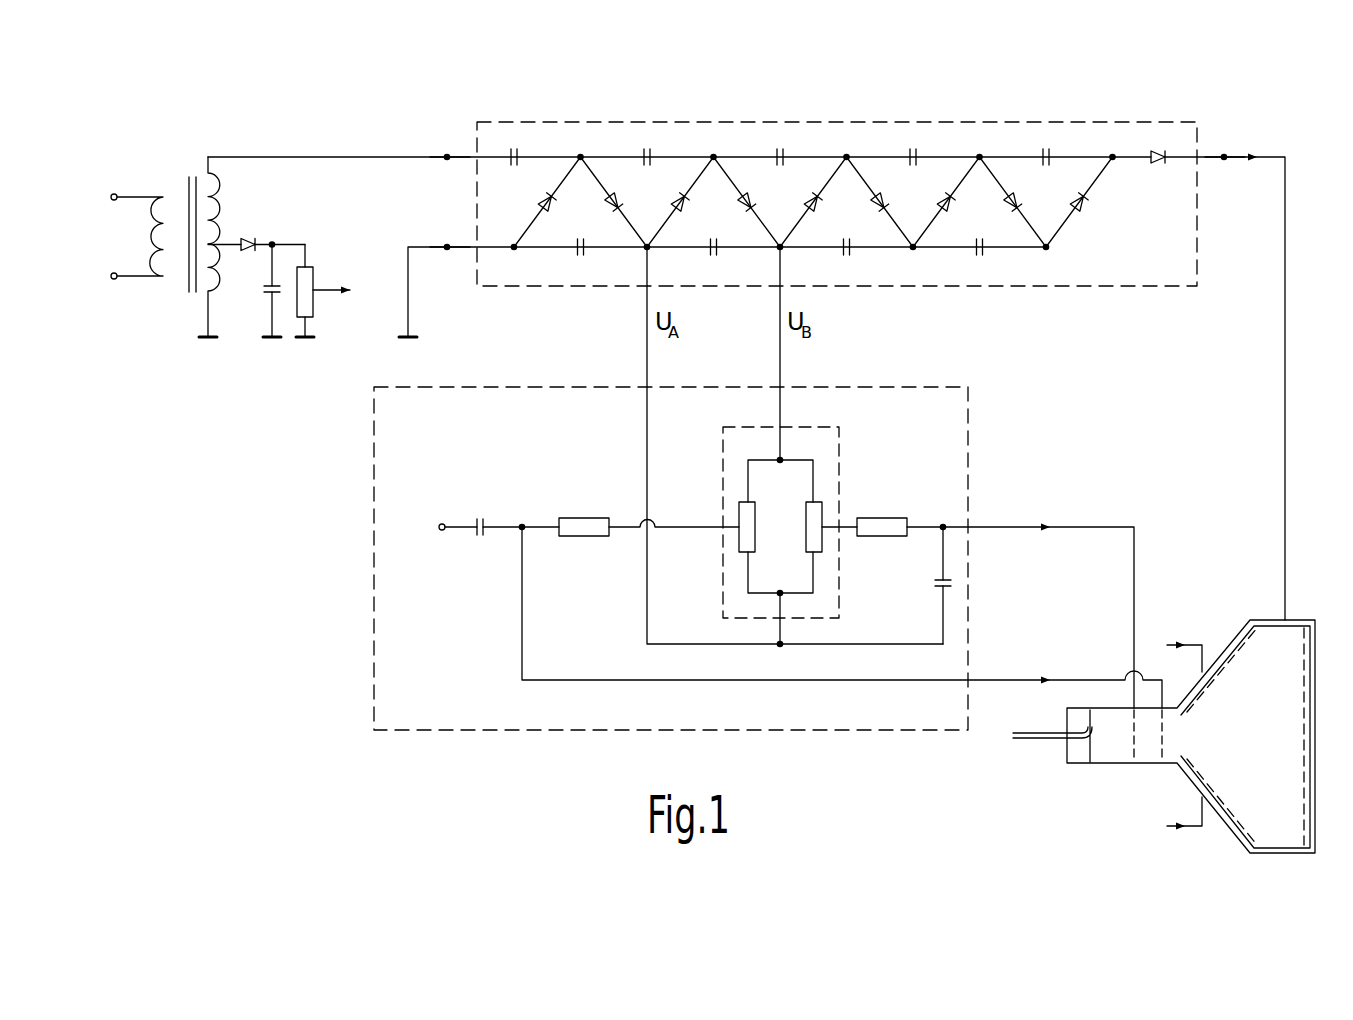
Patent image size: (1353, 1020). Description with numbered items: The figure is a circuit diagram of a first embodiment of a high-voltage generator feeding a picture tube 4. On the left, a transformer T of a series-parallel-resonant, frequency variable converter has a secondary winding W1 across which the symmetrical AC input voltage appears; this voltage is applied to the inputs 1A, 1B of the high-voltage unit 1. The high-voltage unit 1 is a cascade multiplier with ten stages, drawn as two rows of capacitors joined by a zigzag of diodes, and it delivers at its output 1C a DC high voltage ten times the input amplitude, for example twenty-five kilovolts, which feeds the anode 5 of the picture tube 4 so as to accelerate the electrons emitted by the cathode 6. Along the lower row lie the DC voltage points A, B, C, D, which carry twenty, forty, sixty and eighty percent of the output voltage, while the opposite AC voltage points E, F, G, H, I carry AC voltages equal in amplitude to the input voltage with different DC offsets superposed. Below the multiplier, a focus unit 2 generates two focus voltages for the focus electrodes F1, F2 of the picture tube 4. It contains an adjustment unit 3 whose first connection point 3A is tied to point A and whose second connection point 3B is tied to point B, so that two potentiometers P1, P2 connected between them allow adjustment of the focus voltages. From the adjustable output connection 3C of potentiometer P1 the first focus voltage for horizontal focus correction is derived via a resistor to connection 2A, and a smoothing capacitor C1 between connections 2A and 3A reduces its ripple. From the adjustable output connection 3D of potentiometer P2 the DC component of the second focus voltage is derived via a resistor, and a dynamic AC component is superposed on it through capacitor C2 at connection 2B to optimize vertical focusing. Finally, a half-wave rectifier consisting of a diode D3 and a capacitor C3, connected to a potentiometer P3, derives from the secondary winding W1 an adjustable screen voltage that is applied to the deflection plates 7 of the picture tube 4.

The high-voltage unit 1 is at (748, 345).
The input 1A is at (447, 154).
The input 1B is at (447, 250).
The output 1C is at (1224, 154).
The focus unit 2 is at (768, 558).
The connection 2A is at (943, 525).
The connection 2B is at (522, 522).
The adjustment unit 3 is at (785, 532).
The first connection point 3A is at (782, 594).
The second connection point 3B is at (782, 460).
The adjustable output connection 3C is at (823, 528).
The adjustable output connection 3D is at (737, 525).
The picture tube 4 is at (1181, 711).
The anode 5 is at (1316, 635).
The cathode 6 is at (1082, 740).
The deflection plates 7 is at (1232, 655).
The transformer T is at (190, 285).
The secondary winding W1 is at (218, 206).
The diode D3 is at (247, 238).
The capacitor C3 is at (267, 293).
The potentiometer P3 is at (313, 278).
The capacitor C2 is at (480, 538).
The smoothing capacitor C1 is at (950, 583).
The potentiometer P1 is at (807, 530).
The potentiometer P2 is at (756, 530).
The focus electrode F1 is at (1132, 738).
The focus electrode F2 is at (1165, 738).
The DC voltage point A is at (647, 250).
The DC voltage point B is at (780, 250).
The DC voltage point C is at (913, 250).
The DC voltage point D is at (1046, 250).
The AC voltage point E is at (581, 155).
The AC voltage point F is at (714, 155).
The AC voltage point G is at (847, 155).
The AC voltage point H is at (979, 155).
The AC voltage point I is at (1113, 155).